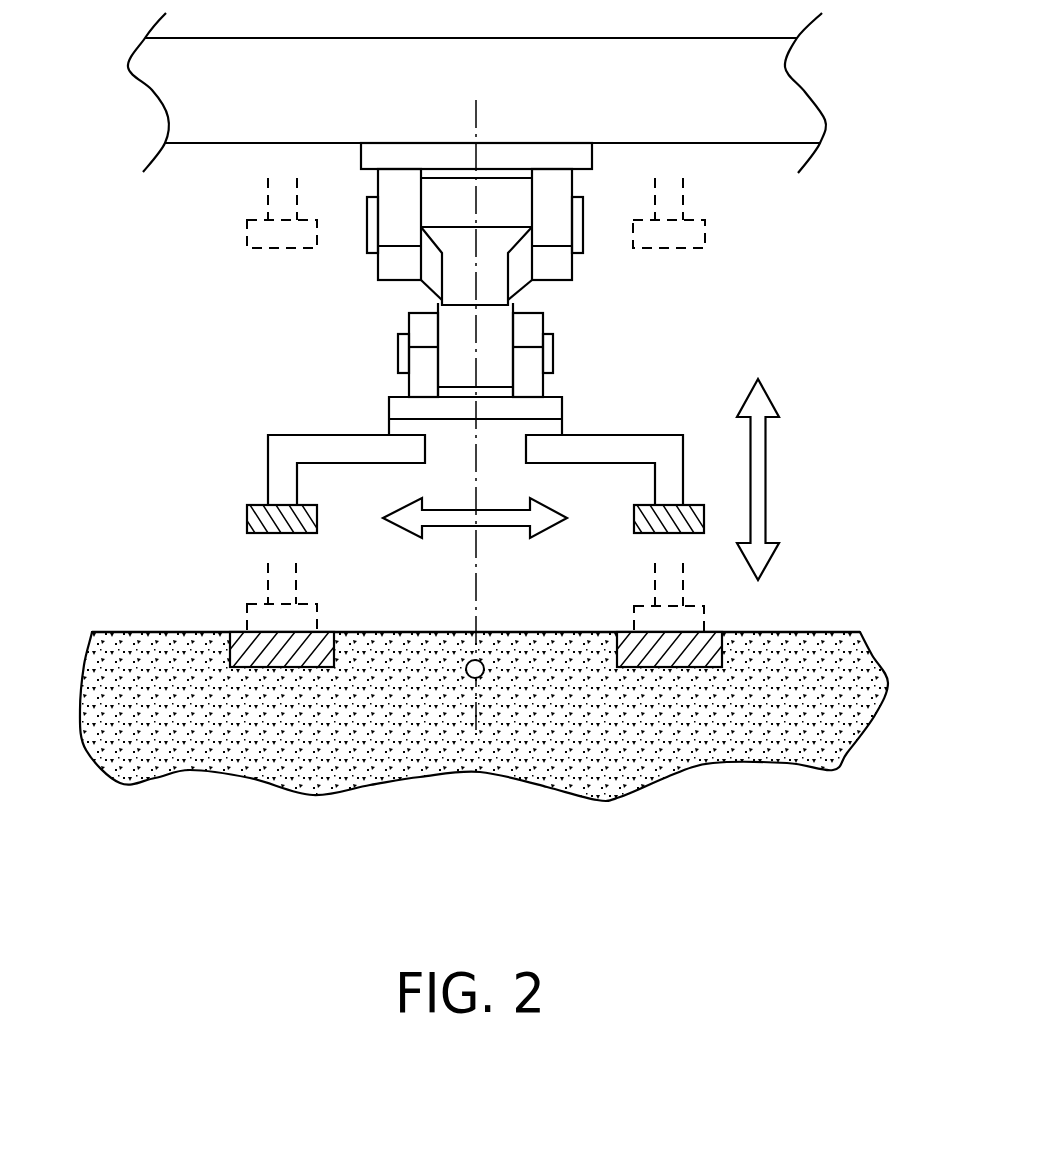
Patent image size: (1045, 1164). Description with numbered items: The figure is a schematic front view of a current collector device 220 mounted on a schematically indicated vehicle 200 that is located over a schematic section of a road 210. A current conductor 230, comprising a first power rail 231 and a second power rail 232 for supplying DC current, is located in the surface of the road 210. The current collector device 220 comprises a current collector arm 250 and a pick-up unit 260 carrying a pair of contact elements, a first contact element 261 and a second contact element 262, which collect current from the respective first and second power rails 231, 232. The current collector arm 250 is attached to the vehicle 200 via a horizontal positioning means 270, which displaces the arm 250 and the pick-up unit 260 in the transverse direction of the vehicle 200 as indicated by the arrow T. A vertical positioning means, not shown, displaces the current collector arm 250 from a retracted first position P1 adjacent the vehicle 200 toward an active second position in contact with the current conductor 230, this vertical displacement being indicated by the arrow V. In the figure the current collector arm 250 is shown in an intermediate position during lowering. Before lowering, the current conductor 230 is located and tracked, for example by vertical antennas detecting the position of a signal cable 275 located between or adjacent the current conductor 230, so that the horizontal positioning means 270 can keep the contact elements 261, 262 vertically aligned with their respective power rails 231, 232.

The vehicle 200 is at (728, 95).
The horizontal positioning means 270 is at (335, 276).
The current collector arm 250 is at (493, 283).
The current collector device 220 is at (265, 374).
The pick-up unit 260 is at (203, 527).
The second contact element 262 is at (260, 505).
The first contact element 261 is at (693, 505).
The current conductor 230 is at (234, 692).
The second power rail 232 is at (283, 668).
The first power rail 231 is at (668, 652).
The signal cable 275 is at (466, 677).
The road 210 is at (805, 722).
The arrow T is at (493, 517).
The arrow V is at (758, 458).
The retracted first position P1 is at (745, 231).